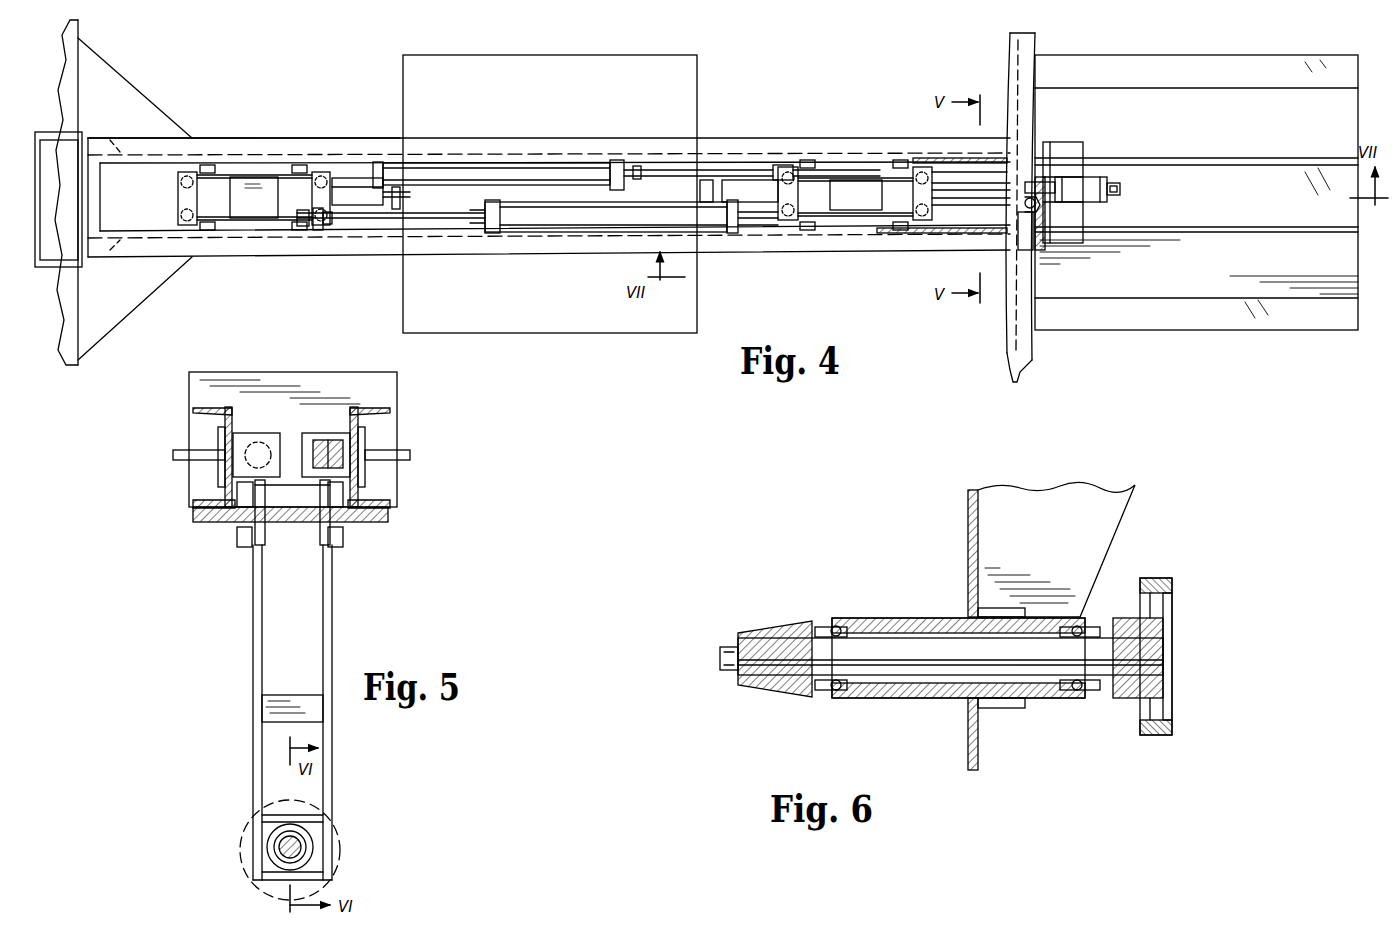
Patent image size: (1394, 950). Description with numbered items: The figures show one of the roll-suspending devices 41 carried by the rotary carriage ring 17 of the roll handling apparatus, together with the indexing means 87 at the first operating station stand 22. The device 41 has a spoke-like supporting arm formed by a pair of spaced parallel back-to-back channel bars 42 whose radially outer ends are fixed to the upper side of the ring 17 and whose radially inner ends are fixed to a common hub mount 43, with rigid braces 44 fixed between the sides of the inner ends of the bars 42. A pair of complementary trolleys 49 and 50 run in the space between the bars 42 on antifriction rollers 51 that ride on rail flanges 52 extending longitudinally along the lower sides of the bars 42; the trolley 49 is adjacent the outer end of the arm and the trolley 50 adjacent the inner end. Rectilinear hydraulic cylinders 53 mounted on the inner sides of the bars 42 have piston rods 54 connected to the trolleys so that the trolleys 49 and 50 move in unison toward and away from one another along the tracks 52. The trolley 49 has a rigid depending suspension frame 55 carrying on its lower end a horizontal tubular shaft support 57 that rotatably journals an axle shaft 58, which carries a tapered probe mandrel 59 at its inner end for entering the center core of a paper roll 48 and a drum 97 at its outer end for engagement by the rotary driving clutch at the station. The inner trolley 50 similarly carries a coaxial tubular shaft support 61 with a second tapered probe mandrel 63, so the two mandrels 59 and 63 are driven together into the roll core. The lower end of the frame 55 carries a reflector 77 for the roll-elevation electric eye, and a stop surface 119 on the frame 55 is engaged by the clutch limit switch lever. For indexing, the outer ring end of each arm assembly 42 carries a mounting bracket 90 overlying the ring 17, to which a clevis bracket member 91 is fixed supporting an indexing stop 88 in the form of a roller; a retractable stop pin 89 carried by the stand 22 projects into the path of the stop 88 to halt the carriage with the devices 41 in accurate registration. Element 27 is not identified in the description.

In FIG. 4, the ring 17 is at (1010, 62).
In FIG. 4, the first operating station stand 22 is at (1211, 322).
In FIG. 4, the wall strip 27 is at (1018, 362).
In FIG. 4, the roll-suspending device 41 is at (232, 142).
In FIG. 4, the channel bars 42 is at (348, 148).
In FIG. 5, the channel bars 42 is at (222, 410).
In FIG. 4, the hub mount 43 is at (78, 170).
In FIG. 5, the hub mount 43 is at (293, 387).
In FIG. 4, the rigid braces 44 is at (115, 92).
In FIG. 5, the rigid braces 44 is at (188, 452).
In FIG. 4, the roll 48 is at (690, 82).
In FIG. 4, the trolley 49 is at (848, 180).
In FIG. 5, the trolley 49 is at (293, 502).
In FIG. 4, the trolley 50 is at (252, 188).
In FIG. 4, the antifriction rollers 51 is at (305, 168).
In FIG. 5, the antifriction rollers 51 is at (243, 518).
In FIG. 4, the rail flanges 52 is at (935, 158).
In FIG. 5, the rail flanges 52 is at (198, 515).
In FIG. 4, the hydraulic cylinders 53 is at (552, 208).
In FIG. 5, the hydraulic cylinders 53 is at (245, 432).
In FIG. 4, the piston rods 54 is at (745, 170).
In FIG. 5, the piston rods 54 is at (317, 442).
In FIG. 5, the suspension frame 55 is at (250, 665).
In FIG. 6, the suspension frame 55 is at (968, 545).
In FIG. 4, the tubular shaft support 57 is at (760, 212).
In FIG. 5, the tubular shaft support 57 is at (310, 855).
In FIG. 6, the tubular shaft support 57 is at (892, 697).
In FIG. 5, the axle shaft 58 is at (300, 843).
In FIG. 6, the axle shaft 58 is at (862, 645).
In FIG. 4, the tapered probe mandrel 59 is at (698, 192).
In FIG. 6, the tapered probe mandrel 59 is at (762, 684).
In FIG. 4, the tubular shaft support 61 is at (355, 200).
In FIG. 4, the tapered probe mandrel 63 is at (412, 200).
In FIG. 6, the reflector 77 is at (965, 760).
In FIG. 4, the indexing means 87 is at (1128, 196).
In FIG. 4, the indexing stop 88 is at (1042, 203).
In FIG. 4, the retractable stop pin 89 is at (1048, 176).
In FIG. 4, the mounting bracket 90 is at (1030, 148).
In FIG. 4, the clevis bracket member 91 is at (1030, 230).
In FIG. 5, the drum 97 is at (240, 825).
In FIG. 6, the drum 97 is at (1145, 735).
In FIG. 5, the stop surface 119 is at (288, 695).